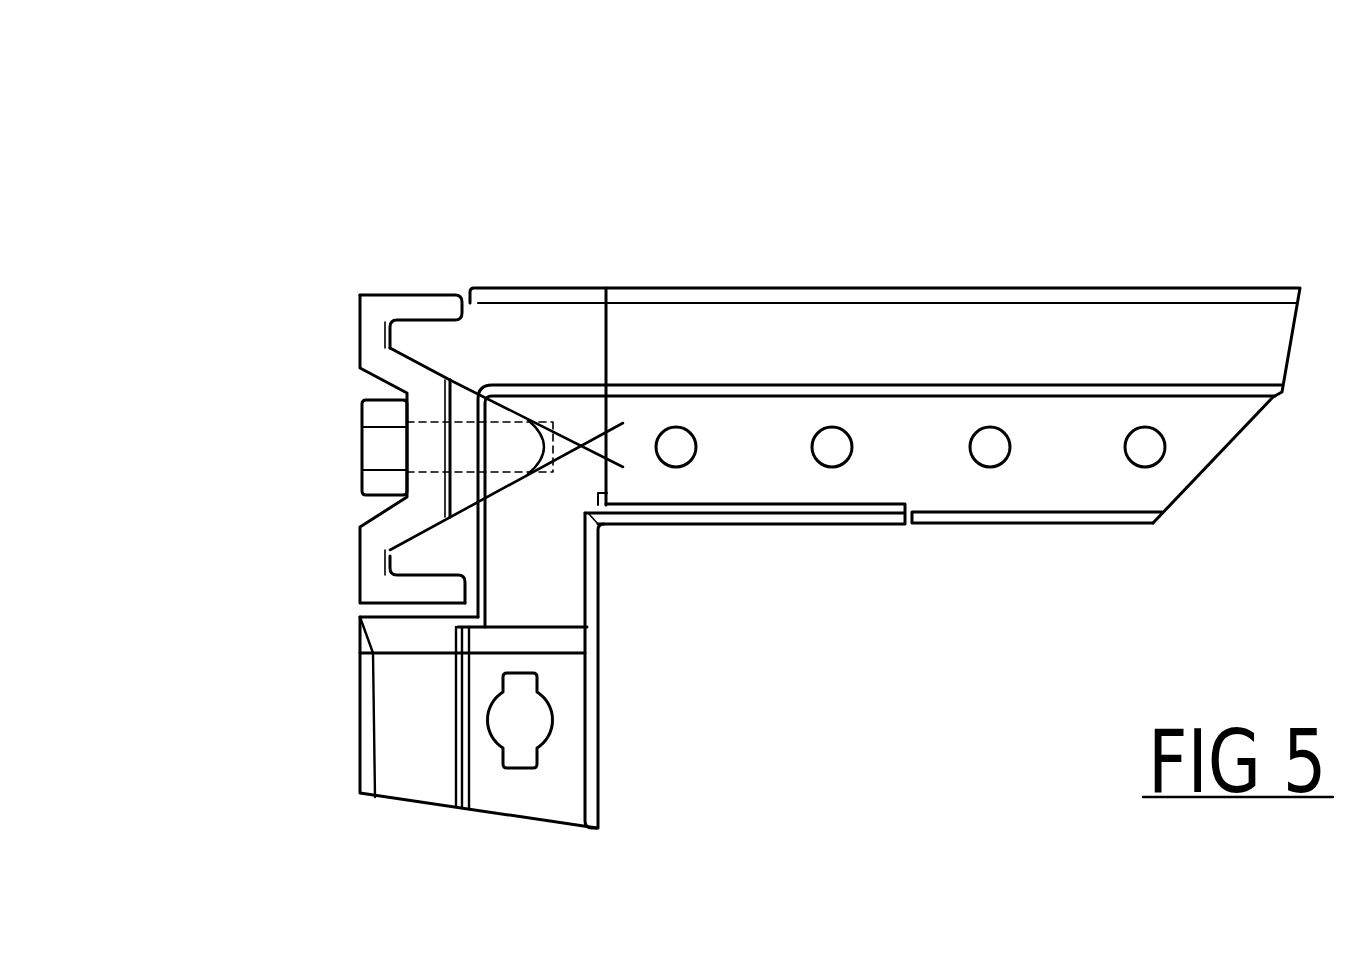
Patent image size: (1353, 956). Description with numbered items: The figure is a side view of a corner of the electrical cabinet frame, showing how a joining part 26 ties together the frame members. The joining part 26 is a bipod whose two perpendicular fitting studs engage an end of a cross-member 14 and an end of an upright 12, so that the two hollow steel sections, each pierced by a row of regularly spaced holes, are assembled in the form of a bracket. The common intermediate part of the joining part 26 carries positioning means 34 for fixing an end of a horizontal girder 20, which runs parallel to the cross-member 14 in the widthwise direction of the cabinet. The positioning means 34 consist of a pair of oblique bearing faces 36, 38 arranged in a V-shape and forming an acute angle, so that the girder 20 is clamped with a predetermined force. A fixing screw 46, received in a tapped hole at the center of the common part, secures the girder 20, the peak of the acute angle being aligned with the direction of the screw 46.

The vertical upright 12 is at (553, 797).
The cross-member 14 is at (943, 350).
The horizontal girder 20 is at (375, 302).
The joining part 26 is at (573, 337).
The positioning means 34 is at (487, 342).
The bearing face 36 is at (421, 360).
The bearing face 38 is at (423, 532).
The fixing screw 46 is at (390, 445).